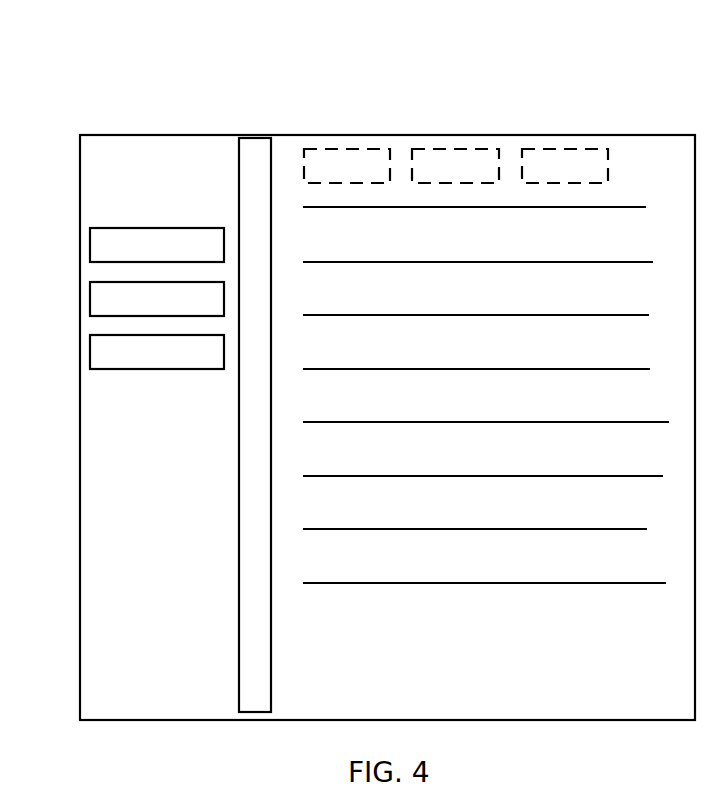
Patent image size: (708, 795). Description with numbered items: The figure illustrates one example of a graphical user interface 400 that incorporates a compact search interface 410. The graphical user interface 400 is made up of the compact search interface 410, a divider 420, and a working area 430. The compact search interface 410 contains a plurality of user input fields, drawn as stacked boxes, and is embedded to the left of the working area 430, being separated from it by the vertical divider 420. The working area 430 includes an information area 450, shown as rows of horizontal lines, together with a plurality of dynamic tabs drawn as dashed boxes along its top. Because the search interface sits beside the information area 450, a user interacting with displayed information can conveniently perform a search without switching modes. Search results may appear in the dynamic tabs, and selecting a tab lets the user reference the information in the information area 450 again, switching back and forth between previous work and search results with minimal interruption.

The graphical user interface 400 is at (390, 97).
The compact search interface 410 is at (122, 228).
The divider 420 is at (259, 167).
The working area 430 is at (486, 330).
The information area 450 is at (464, 362).